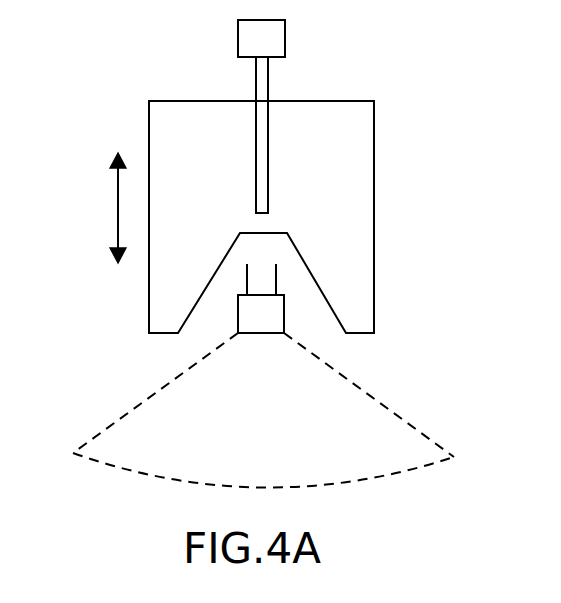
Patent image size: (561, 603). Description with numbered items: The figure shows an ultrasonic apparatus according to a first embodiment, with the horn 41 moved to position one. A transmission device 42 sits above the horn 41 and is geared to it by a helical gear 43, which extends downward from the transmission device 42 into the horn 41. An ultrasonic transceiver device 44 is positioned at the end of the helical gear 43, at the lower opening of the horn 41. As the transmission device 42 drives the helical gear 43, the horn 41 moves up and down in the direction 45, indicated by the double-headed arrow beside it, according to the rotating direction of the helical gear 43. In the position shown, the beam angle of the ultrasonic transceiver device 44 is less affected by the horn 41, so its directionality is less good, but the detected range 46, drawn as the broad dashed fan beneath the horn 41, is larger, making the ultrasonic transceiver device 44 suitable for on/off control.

The horn 41 is at (374, 153).
The transmission device 42 is at (276, 45).
The helical gear 43 is at (263, 93).
The ultrasonic transceiver device 44 is at (278, 318).
The direction 45 is at (117, 213).
The detected range 46 is at (372, 395).